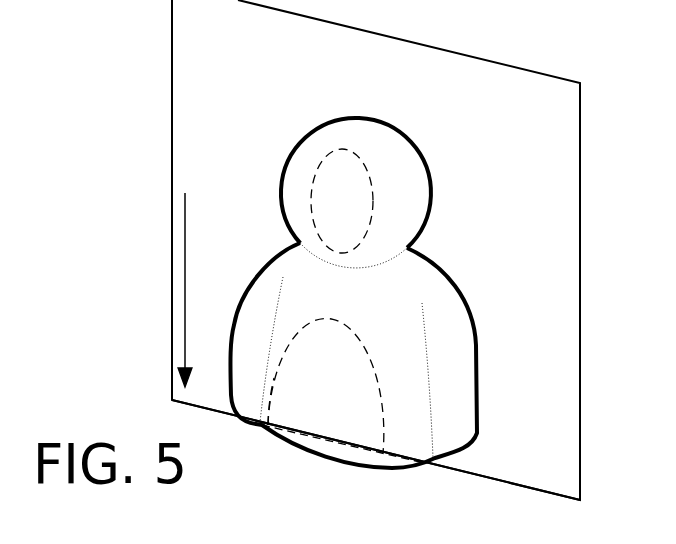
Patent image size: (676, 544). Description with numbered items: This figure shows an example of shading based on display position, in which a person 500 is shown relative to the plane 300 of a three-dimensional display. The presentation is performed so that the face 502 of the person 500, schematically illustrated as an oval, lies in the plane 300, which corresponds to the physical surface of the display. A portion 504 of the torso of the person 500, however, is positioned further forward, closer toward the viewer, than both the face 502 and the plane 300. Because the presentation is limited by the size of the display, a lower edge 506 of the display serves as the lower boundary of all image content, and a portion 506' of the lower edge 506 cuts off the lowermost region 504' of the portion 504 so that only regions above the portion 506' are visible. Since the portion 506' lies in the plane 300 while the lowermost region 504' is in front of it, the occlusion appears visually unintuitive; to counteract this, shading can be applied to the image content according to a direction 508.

The plane of the 3D display 300 is at (557, 475).
The person 500 is at (498, 325).
The face 502 is at (393, 172).
The portion of the torso 504 is at (340, 379).
The lowermost region of the torso portion 504' is at (296, 395).
The lower edge of the 3D display 506 is at (376, 452).
The portion of the lower edge 506' is at (341, 424).
The direction 508 is at (212, 283).